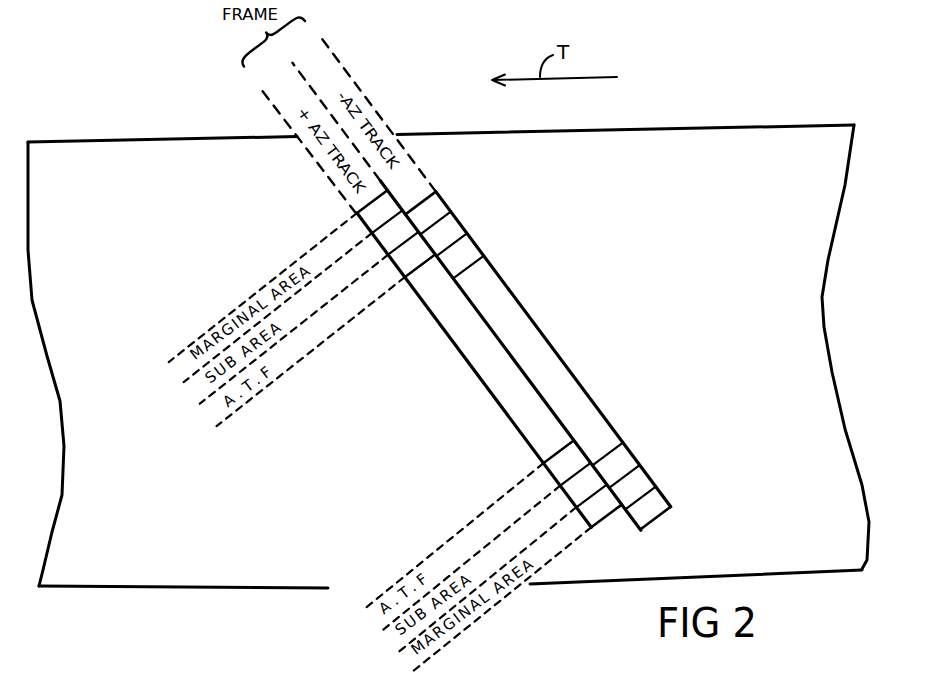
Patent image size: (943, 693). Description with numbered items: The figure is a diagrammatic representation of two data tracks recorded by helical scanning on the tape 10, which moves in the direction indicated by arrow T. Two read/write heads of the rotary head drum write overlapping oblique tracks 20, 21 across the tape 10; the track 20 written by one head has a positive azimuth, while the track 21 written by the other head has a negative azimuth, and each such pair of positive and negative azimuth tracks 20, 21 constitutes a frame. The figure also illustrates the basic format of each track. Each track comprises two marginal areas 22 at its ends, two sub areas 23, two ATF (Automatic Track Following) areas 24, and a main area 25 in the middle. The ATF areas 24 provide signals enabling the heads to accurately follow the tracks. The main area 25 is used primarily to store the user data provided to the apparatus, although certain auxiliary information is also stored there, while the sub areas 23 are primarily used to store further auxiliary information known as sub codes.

The tape 10 is at (745, 132).
The positive azimuth track 20 is at (486, 307).
The negative azimuth track 21 is at (556, 338).
The marginal area 22 is at (357, 213).
The sub area 23 is at (402, 228).
The ATF area 24 is at (413, 250).
The main area 25 is at (463, 333).